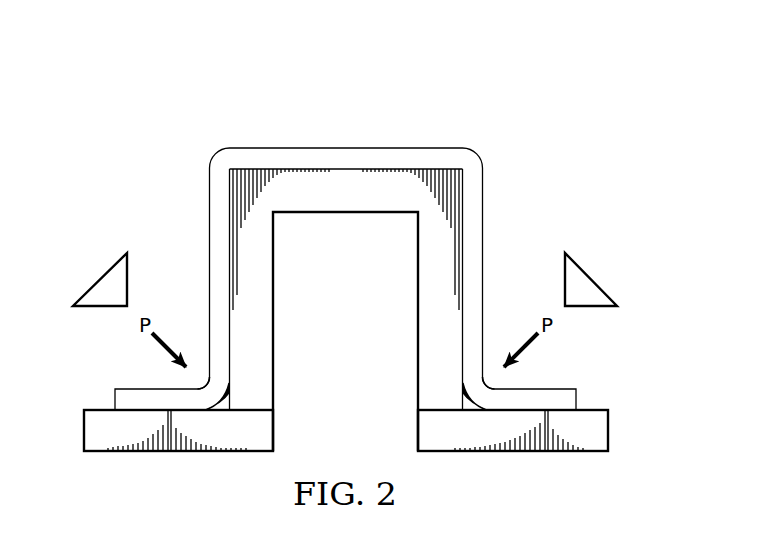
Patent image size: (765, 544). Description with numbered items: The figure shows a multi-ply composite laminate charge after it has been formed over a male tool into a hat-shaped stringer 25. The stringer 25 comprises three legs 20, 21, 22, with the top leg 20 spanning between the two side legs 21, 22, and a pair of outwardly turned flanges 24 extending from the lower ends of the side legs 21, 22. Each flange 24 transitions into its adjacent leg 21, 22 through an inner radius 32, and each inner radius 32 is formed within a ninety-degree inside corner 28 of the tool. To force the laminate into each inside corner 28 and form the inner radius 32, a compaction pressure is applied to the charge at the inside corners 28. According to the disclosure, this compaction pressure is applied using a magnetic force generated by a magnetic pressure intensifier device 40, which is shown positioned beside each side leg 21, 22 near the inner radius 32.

The leg 20 is at (347, 148).
The leg 21 is at (209, 275).
The leg 22 is at (483, 275).
The outwardly turned flange 24 is at (115, 400).
The hat-shaped stringer 25 is at (452, 79).
The inside corner 28 is at (240, 405).
The inner radius 32 is at (186, 378).
The magnetic pressure intensifier device 40 is at (98, 279).